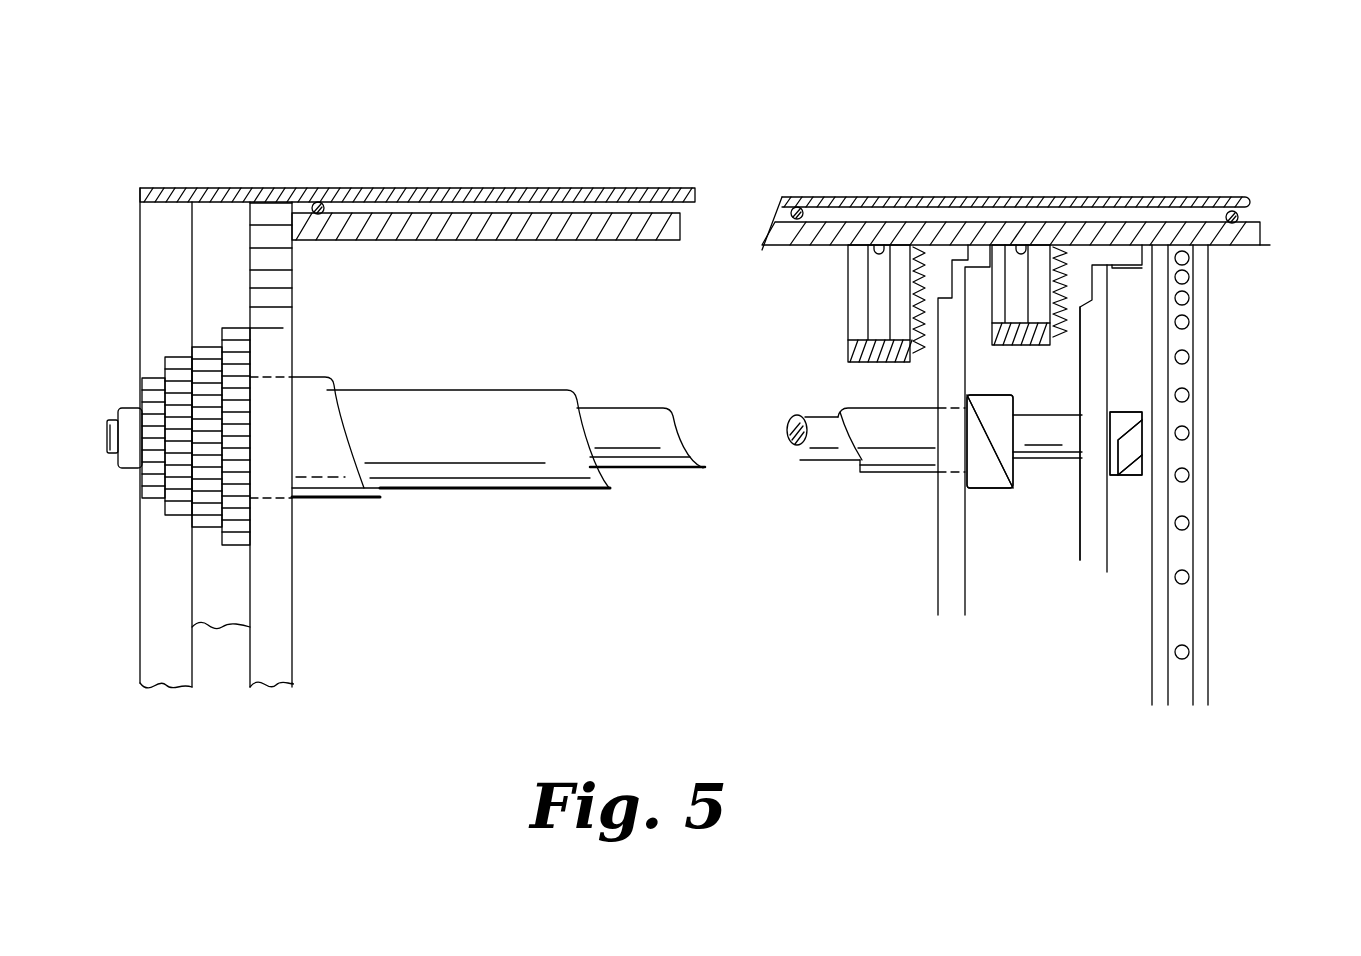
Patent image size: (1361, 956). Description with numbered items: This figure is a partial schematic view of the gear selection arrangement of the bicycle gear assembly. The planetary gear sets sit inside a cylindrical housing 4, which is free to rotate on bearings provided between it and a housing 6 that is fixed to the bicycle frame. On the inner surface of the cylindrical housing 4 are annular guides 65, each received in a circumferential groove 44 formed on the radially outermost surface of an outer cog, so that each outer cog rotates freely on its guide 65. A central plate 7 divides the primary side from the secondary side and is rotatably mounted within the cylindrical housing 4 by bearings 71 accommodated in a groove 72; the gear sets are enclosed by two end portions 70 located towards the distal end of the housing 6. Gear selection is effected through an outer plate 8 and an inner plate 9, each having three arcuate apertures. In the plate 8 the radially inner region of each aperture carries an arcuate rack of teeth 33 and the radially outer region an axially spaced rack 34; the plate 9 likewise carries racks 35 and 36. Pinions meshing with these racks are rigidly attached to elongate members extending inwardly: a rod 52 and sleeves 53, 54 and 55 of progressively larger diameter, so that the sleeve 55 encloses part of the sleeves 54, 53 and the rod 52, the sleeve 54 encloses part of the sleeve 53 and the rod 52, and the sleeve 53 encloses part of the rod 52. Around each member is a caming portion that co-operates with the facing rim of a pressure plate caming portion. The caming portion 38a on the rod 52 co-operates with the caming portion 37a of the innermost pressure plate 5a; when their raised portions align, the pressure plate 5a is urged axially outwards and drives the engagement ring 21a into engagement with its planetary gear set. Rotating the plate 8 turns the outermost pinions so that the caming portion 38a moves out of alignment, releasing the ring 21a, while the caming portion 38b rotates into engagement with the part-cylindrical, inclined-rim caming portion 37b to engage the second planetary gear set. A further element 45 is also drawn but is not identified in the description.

The cylindrical housing 4 is at (372, 236).
The innermost pressure plate 5a is at (1092, 348).
The housing 6 is at (587, 190).
The central plate 7 is at (1160, 680).
The outer plate 8 is at (163, 650).
The inner plate 9 is at (225, 605).
The engagement ring 21a is at (1085, 270).
The arcuate rack of teeth 33 is at (212, 302).
The rack 34 is at (207, 437).
The arcuate rack of teeth 35 is at (178, 436).
The rack 36 is at (153, 438).
The caming portion of innermost pressure plate 37a is at (1130, 480).
The caming portion 38a is at (1126, 443).
The caming portion of outer pressure plate 37b is at (995, 495).
The caming portion 38b is at (990, 441).
The circumferential groove 44 is at (875, 298).
The fastening screw 45 is at (328, 210).
The rod 52 is at (833, 447).
The sleeve 53 is at (668, 443).
The sleeve 54 is at (498, 468).
The sleeve 55 is at (318, 472).
The annular guide 65 is at (1020, 245).
The end portions 70 is at (273, 280).
The bearings 71 is at (1197, 650).
The groove 72 is at (1183, 693).